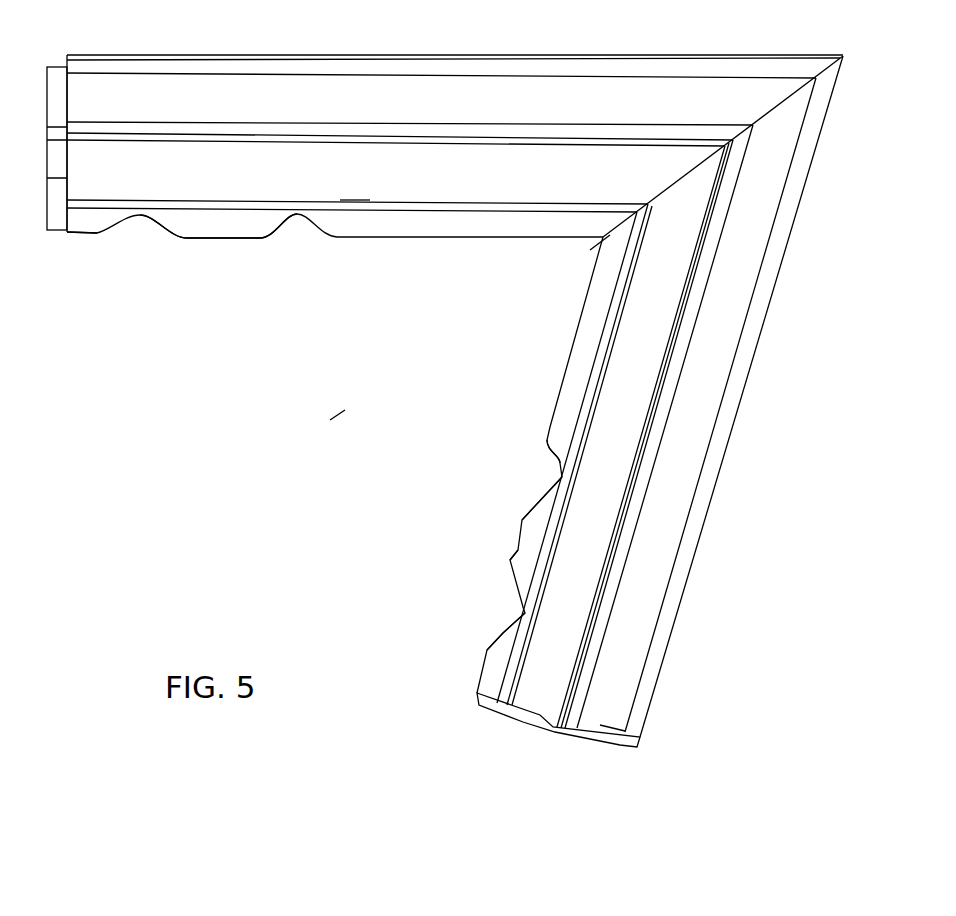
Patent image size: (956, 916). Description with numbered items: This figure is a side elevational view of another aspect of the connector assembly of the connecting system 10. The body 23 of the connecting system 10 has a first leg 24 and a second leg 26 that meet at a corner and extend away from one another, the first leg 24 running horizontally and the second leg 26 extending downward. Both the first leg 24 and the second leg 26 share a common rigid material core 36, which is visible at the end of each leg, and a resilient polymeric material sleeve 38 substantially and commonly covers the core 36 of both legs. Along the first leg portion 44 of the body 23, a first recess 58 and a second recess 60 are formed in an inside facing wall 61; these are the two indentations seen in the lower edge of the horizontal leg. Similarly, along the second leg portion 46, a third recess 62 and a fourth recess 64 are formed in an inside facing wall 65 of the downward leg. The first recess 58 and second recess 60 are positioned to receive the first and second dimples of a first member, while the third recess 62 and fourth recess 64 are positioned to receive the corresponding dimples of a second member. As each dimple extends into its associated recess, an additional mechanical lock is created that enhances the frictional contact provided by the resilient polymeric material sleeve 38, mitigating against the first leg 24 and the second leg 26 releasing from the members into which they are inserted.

The connecting system 10 is at (313, 433).
The body 23 is at (580, 265).
The first leg 24 is at (325, 87).
The second leg 26 is at (605, 392).
The rigid material core 36 is at (55, 232).
The resilient polymeric material sleeve 38 is at (93, 229).
The first leg portion 44 is at (350, 190).
The second leg portion 46 is at (530, 537).
The first recess 58 is at (152, 225).
The second recess 60 is at (277, 227).
The inside facing wall 61 is at (217, 243).
The third recess 62 is at (557, 453).
The fourth recess 64 is at (503, 640).
The inside facing wall 65 is at (505, 559).